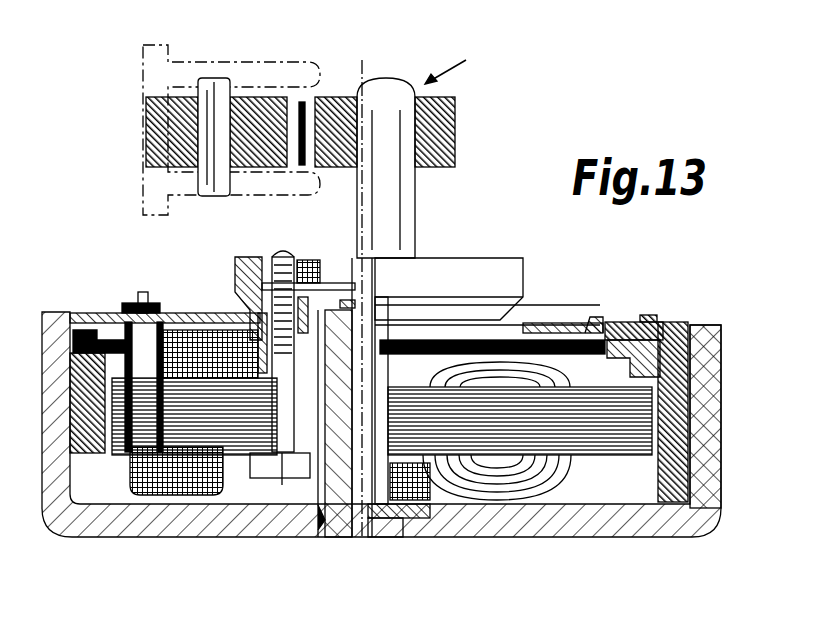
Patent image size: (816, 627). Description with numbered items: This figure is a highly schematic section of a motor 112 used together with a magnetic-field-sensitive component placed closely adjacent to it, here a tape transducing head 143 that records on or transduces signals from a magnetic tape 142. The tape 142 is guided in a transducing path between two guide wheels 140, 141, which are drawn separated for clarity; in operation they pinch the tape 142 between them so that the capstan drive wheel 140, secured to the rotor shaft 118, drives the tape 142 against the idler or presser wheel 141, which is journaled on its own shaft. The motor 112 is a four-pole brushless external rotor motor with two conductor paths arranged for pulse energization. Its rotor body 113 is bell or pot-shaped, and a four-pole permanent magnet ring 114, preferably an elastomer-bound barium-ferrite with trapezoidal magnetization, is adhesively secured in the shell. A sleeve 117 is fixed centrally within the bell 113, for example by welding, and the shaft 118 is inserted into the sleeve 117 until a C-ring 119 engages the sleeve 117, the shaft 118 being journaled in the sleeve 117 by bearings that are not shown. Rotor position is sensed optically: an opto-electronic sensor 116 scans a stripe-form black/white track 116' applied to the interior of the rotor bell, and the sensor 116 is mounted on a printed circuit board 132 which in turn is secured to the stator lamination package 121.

The motor 112 is at (573, 336).
The rotor body 113 is at (427, 540).
The permanent magnet ring 114 is at (72, 312).
The opto-electronic sensor 116 is at (646, 375).
The black/white track 116' is at (401, 307).
The sleeve 117 is at (330, 540).
The rotor shaft 118 is at (400, 220).
The C-ring 119 is at (345, 300).
The stator lamination package 121 is at (382, 415).
The printed circuit board 132 is at (172, 313).
The capstan drive wheel 140 is at (455, 136).
The presser wheel 141 is at (146, 135).
The magnetic tape 142 is at (305, 102).
The tape transducing head 143 is at (213, 78).